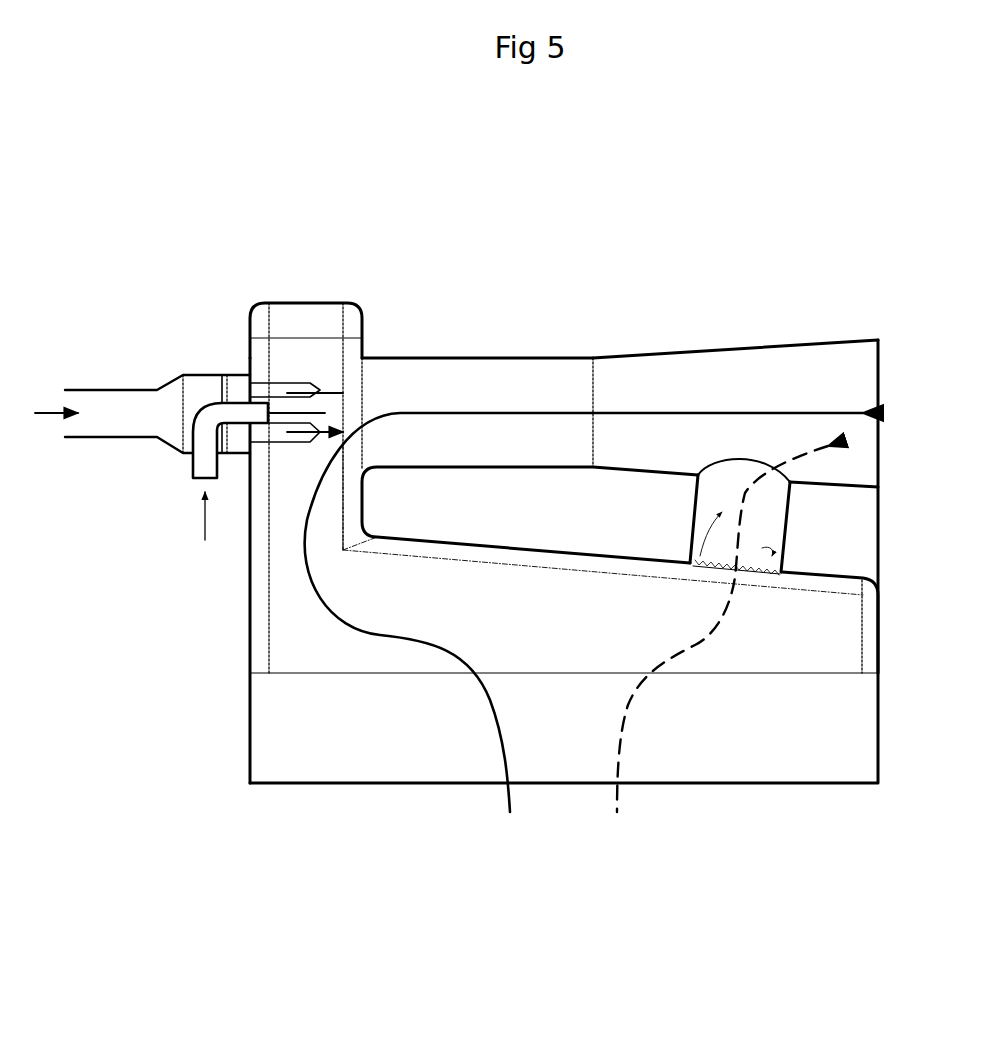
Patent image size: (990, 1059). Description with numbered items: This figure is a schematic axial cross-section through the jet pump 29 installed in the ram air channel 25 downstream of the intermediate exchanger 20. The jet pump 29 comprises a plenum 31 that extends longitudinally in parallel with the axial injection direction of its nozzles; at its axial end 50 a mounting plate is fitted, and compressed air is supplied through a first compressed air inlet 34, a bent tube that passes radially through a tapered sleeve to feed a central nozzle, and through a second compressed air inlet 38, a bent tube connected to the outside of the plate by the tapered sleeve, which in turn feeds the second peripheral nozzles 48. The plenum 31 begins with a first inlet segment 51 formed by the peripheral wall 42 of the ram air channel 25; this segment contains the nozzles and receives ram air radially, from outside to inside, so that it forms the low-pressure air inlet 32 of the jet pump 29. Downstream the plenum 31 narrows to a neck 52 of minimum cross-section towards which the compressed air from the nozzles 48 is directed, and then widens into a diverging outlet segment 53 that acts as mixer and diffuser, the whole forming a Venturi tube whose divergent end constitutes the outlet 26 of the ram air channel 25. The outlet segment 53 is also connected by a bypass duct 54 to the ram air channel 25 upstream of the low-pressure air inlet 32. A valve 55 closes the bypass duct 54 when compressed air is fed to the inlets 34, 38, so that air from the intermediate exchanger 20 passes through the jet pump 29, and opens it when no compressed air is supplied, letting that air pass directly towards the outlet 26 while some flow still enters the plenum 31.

The intermediate exchanger 20 is at (840, 732).
The ram air channel 25 is at (603, 626).
The outlet of the ram air channel 26 is at (858, 380).
The jet pump 29 is at (178, 466).
The plenum 31 is at (548, 390).
The low-pressure air inlet 32 is at (295, 463).
The first compressed air inlet 34 is at (202, 462).
The second compressed air inlet 38 is at (100, 398).
The peripheral wall 42 is at (503, 357).
The second peripheral nozzles 48 is at (283, 430).
The axial end of the plenum 50 is at (250, 348).
The first inlet segment 51 is at (310, 312).
The neck 52 is at (362, 382).
The diverging outlet segment 53 is at (668, 390).
The bypass duct 54 is at (753, 508).
The valve 55 is at (748, 573).